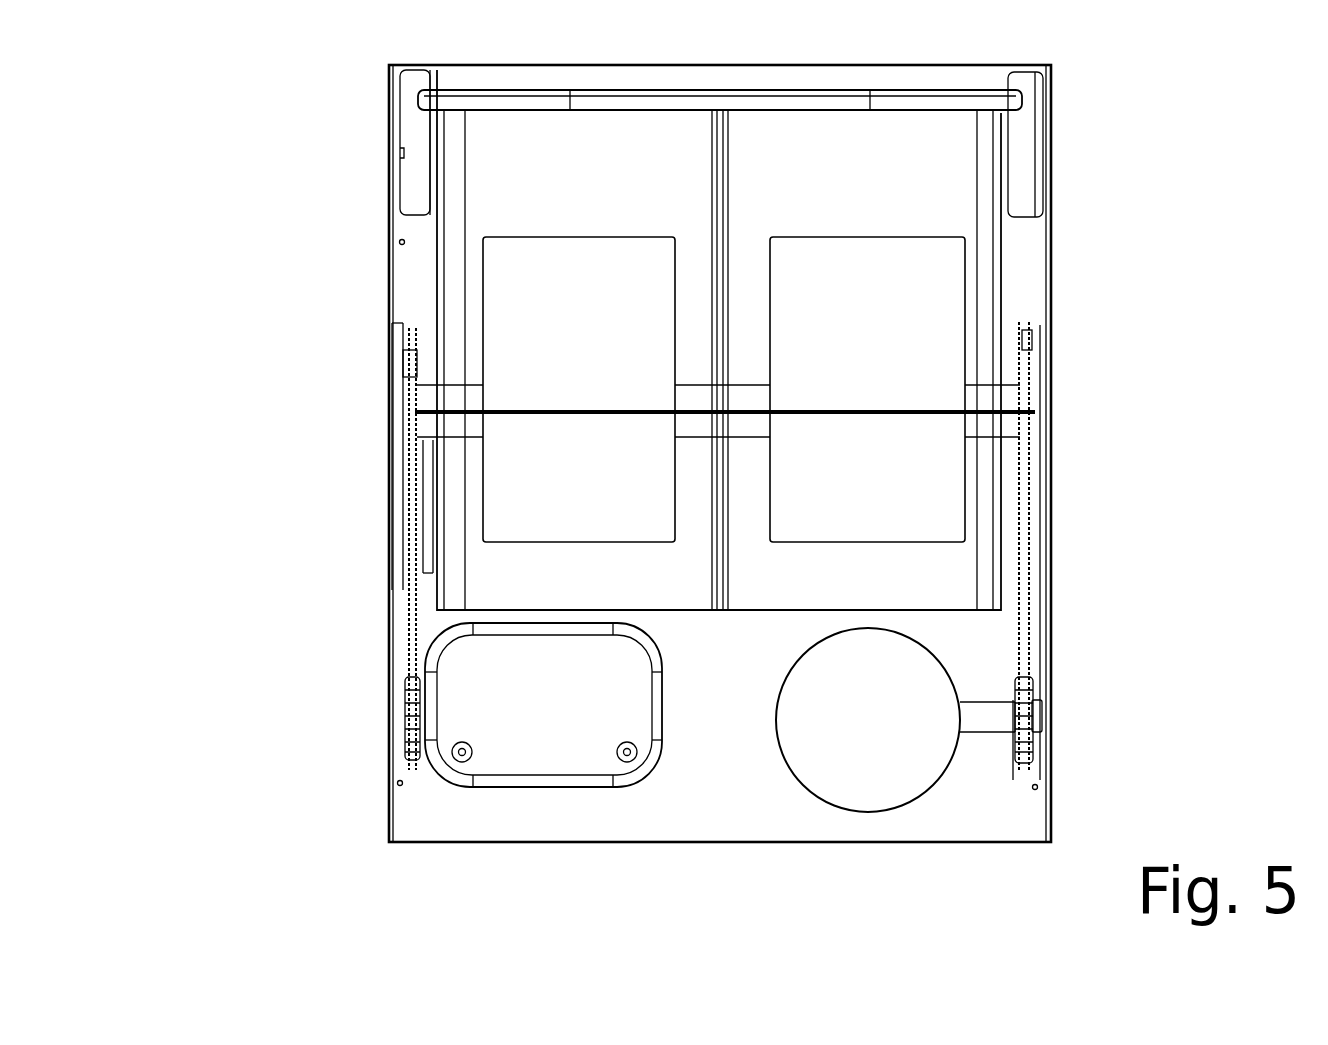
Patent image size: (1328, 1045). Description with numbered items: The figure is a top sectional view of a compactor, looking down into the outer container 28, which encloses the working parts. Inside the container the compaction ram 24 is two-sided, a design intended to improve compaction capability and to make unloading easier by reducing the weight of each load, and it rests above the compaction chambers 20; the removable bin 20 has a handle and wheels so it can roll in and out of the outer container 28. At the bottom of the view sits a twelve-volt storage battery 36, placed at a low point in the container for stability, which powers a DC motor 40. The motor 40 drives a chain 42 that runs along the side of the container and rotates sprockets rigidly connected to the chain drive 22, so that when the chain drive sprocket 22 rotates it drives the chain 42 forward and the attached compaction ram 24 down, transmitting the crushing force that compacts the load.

The compaction chamber 20 is at (557, 175).
The chain drive sprocket 22 is at (1042, 708).
The compaction ram 24 is at (908, 292).
The outer container 28 is at (383, 265).
The storage battery 36 is at (485, 697).
The DC motor 40 is at (855, 727).
The chain 42 is at (1035, 520).